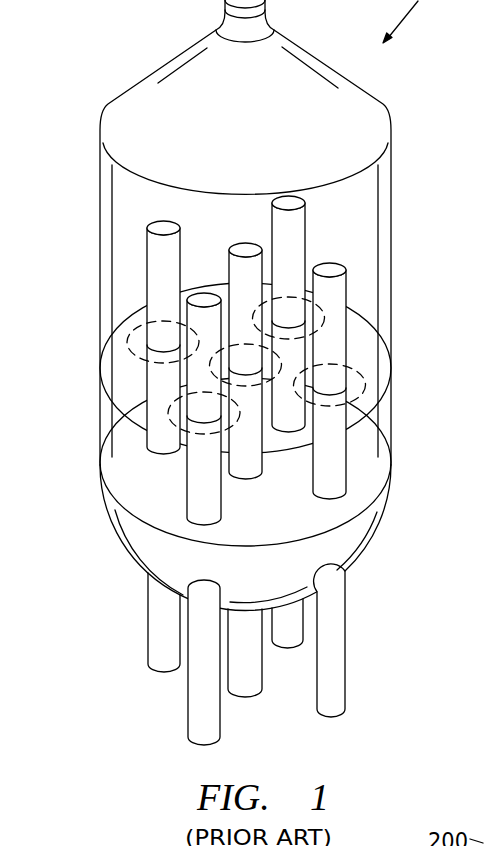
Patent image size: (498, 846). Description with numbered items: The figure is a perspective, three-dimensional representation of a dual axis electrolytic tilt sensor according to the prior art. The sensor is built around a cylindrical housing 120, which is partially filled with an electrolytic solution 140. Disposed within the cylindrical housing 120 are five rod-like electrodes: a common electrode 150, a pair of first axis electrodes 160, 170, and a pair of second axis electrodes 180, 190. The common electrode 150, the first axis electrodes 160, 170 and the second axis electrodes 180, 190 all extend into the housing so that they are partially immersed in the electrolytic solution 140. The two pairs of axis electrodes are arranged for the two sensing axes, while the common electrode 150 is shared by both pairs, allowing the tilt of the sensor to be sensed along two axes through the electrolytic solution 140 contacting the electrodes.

The cylindrical housing 120 is at (392, 237).
The electrolytic solution 140 is at (355, 448).
The common electrode 150 is at (245, 250).
The first axis electrode 160 is at (195, 381).
The first axis electrode 170 is at (288, 228).
The second axis electrode 180 is at (155, 253).
The second axis electrode 190 is at (337, 337).